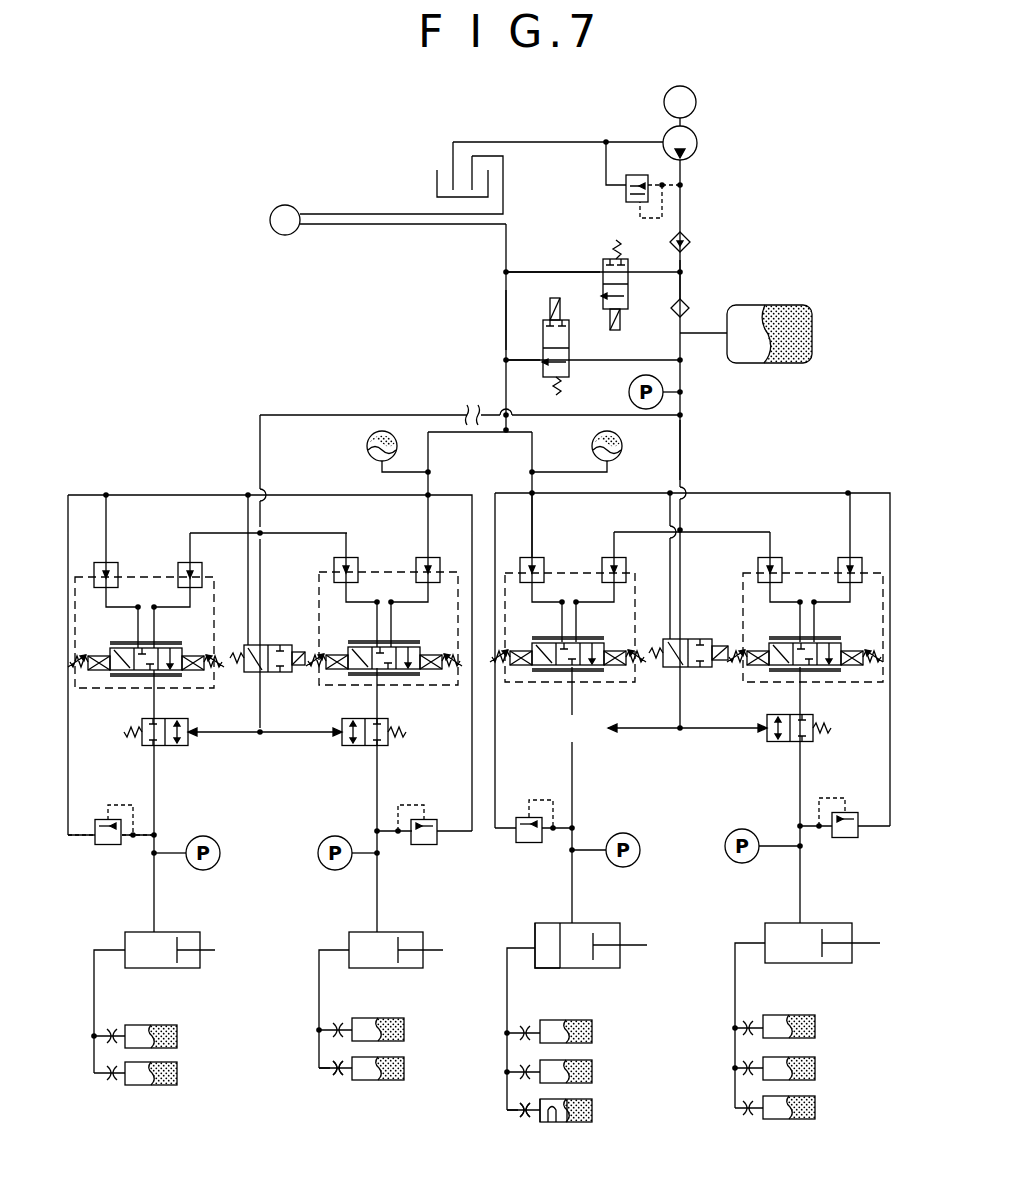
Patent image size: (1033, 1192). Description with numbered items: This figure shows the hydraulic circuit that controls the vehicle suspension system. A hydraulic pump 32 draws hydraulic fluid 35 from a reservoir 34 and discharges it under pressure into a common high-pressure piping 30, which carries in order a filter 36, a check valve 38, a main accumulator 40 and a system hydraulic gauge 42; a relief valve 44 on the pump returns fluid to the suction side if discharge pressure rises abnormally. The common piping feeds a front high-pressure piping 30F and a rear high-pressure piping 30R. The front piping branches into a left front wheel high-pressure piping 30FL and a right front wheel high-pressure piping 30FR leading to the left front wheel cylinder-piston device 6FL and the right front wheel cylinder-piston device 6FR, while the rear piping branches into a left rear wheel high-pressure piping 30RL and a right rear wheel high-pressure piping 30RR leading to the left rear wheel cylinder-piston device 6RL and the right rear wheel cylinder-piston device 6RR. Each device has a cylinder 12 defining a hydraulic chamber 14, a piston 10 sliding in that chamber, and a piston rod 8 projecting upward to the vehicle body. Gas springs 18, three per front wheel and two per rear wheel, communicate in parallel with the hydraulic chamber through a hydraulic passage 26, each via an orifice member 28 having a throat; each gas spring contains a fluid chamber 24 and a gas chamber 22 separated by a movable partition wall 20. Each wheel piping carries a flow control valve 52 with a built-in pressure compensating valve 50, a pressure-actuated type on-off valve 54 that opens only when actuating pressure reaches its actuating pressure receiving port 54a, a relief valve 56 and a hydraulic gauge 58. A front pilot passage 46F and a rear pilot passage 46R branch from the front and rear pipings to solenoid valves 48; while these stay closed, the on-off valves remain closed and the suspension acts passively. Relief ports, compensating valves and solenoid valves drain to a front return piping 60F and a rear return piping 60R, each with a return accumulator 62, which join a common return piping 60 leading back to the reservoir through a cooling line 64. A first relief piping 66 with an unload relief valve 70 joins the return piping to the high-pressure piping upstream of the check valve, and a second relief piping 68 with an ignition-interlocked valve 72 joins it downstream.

The left rear wheel cylinder-piston device 6RL is at (180, 930).
The right rear wheel cylinder-piston device 6RR is at (421, 930).
The left front wheel cylinder-piston device 6FL is at (593, 922).
The right front wheel cylinder-piston device 6FR is at (828, 922).
The piston rod 8 is at (646, 944).
The piston 10 is at (592, 961).
The cylinder 12 is at (545, 922).
The hydraulic chamber 14 is at (560, 954).
The gas spring 18 is at (404, 1068).
The movable partition wall 20 is at (563, 1124).
The gas chamber 22 is at (590, 1124).
The fluid chamber 24 is at (546, 1124).
The hydraulic passage 26 is at (320, 1074).
The orifice member 28 is at (339, 1082).
The common high-pressure piping 30 is at (682, 293).
The rear high-pressure piping 30R is at (260, 445).
The front high-pressure piping 30F is at (682, 441).
The left rear wheel high-pressure piping 30RL is at (219, 531).
The right rear wheel high-pressure piping 30RR is at (318, 532).
The left front wheel high-pressure piping 30FL is at (638, 531).
The right front wheel high-pressure piping 30FR is at (742, 531).
The hydraulic pump 32 is at (664, 130).
The reservoir 34 is at (438, 169).
The hydraulic fluid 35 is at (437, 185).
The filter 36 is at (690, 243).
The check valve 38 is at (676, 313).
The main accumulator 40 is at (806, 305).
The system hydraulic gauge 42 is at (629, 392).
The relief valve 44 is at (626, 192).
The rear pilot passage 46R is at (262, 579).
The front pilot passage 46F is at (684, 575).
The solenoid valve 48 is at (282, 645).
The pressure compensating valve 50 is at (567, 560).
The flow control valve 52 is at (598, 682).
The pressure-actuated type on-off valve 54 is at (585, 745).
The actuating pressure receiving port 54a is at (612, 740).
The relief valve 56 is at (529, 845).
The hydraulic gauge 58 is at (641, 841).
The common return piping 60 is at (506, 318).
The rear return piping 60R is at (428, 455).
The front return piping 60F is at (533, 455).
The return accumulator 62 is at (367, 447).
The cooling line 64 is at (270, 221).
The first relief piping 66 is at (531, 271).
The second relief piping 68 is at (506, 358).
The unload relief valve 70 is at (603, 263).
The ignition-interlocked valve 72 is at (549, 320).